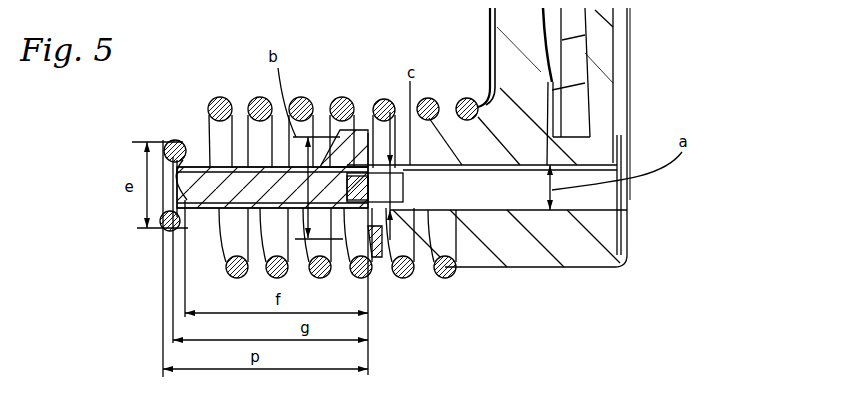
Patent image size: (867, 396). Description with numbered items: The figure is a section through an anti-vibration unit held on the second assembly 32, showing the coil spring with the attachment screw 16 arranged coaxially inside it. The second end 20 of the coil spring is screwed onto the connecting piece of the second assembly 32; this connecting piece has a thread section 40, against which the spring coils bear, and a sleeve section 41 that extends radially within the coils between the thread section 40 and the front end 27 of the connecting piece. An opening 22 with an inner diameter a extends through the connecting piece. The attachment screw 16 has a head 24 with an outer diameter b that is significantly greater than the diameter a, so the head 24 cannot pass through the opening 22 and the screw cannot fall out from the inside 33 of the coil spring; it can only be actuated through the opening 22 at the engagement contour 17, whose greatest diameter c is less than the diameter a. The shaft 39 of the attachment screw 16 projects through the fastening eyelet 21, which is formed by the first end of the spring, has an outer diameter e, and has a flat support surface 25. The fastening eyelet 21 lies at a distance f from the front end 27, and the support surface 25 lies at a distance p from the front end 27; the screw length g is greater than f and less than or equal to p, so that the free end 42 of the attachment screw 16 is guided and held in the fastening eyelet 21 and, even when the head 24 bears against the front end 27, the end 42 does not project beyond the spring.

The attachment screw 16 is at (231, 193).
The engagement contour 17 is at (355, 163).
The second end 20 is at (471, 89).
The fastening eyelet 21 is at (160, 230).
The opening 22 is at (587, 202).
The head 24 is at (360, 163).
The support surface 25 is at (158, 142).
The front end 27 is at (370, 212).
The second assembly 32 is at (602, 60).
The inside 33 is at (217, 126).
The shaft 39 is at (208, 197).
The thread section 40 is at (446, 128).
The sleeve section 41 is at (390, 115).
The free end 42 is at (187, 158).